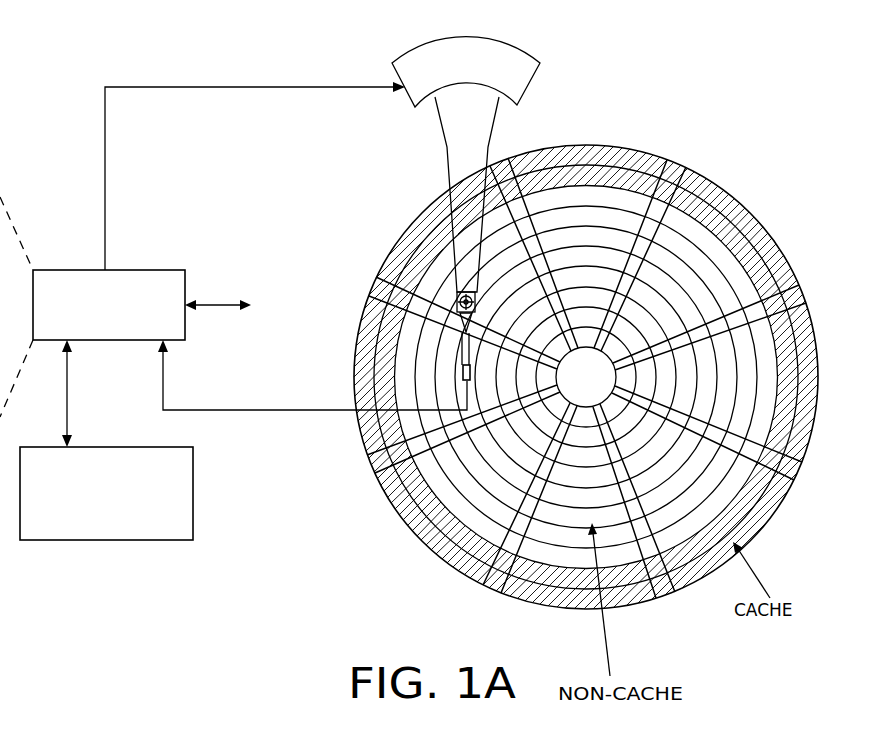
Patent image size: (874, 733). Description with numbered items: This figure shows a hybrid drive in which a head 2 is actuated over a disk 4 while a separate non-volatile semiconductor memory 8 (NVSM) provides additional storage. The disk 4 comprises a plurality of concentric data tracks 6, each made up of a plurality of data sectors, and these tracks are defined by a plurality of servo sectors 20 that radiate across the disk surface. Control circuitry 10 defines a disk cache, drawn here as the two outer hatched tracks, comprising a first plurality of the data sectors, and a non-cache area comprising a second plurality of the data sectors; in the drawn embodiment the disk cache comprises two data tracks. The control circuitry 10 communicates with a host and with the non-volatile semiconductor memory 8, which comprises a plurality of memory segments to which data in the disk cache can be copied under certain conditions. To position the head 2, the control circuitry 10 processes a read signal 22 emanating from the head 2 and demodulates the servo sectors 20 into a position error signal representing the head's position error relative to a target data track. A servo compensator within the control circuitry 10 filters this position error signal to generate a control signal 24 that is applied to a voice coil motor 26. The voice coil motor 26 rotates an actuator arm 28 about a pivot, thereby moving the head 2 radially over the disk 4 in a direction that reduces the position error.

The head 2 is at (452, 386).
The disk 4 is at (746, 199).
The data tracks 6 is at (590, 162).
The non-volatile semiconductor memory 8 is at (193, 493).
The control circuitry 10 is at (150, 270).
The servo sectors 20 is at (677, 166).
The read signal 22 is at (250, 410).
The control signal 24 is at (105, 164).
The voice coil motor 26 is at (412, 104).
The actuator arm 28 is at (450, 182).